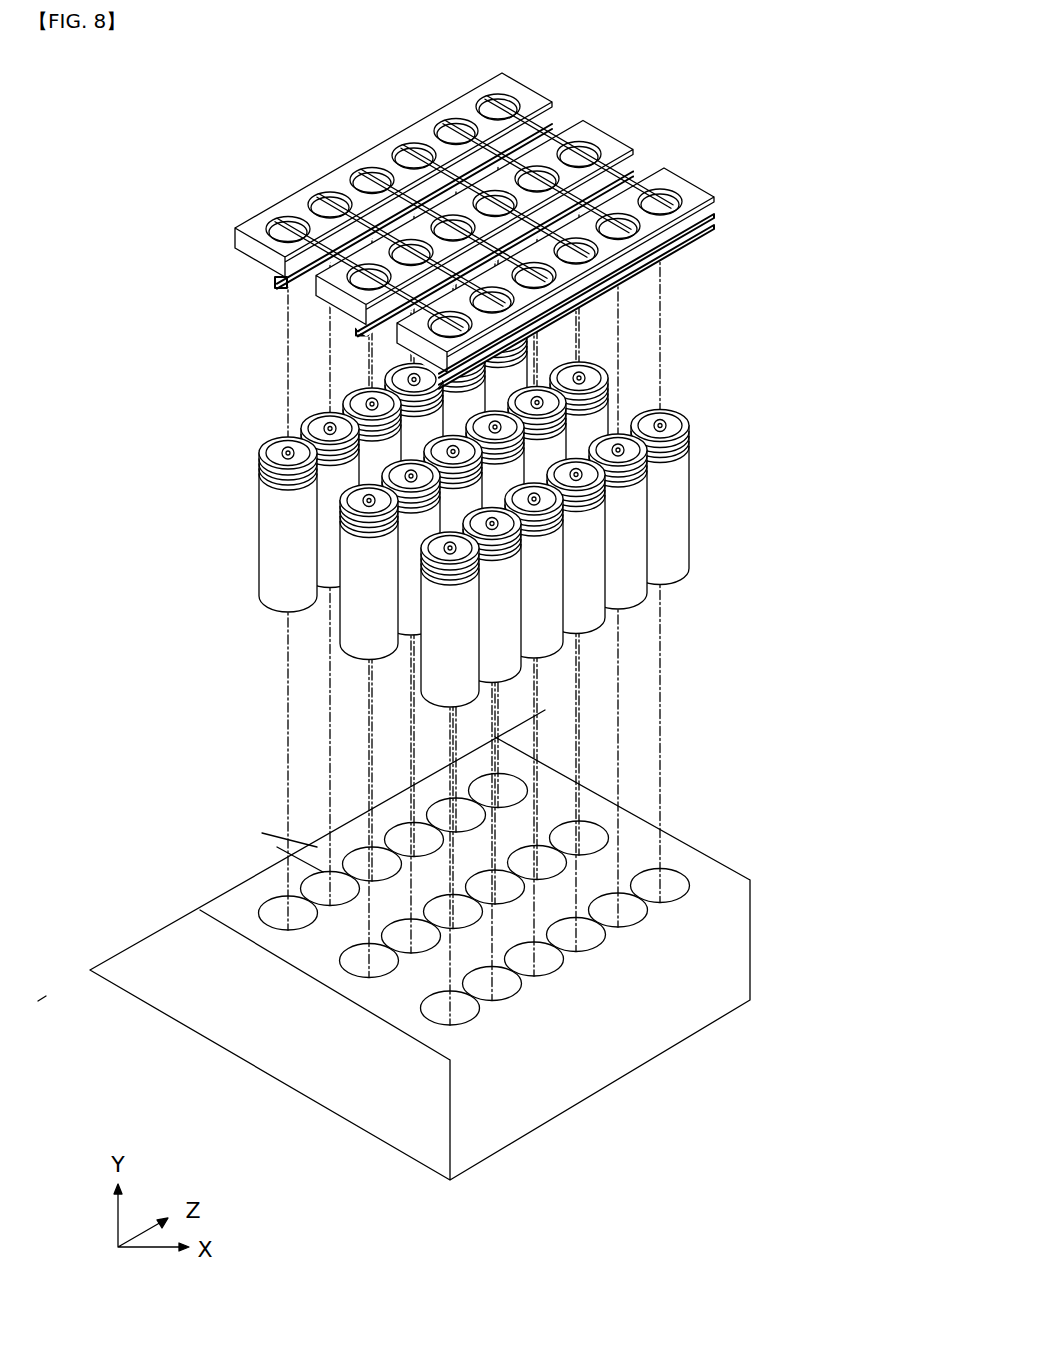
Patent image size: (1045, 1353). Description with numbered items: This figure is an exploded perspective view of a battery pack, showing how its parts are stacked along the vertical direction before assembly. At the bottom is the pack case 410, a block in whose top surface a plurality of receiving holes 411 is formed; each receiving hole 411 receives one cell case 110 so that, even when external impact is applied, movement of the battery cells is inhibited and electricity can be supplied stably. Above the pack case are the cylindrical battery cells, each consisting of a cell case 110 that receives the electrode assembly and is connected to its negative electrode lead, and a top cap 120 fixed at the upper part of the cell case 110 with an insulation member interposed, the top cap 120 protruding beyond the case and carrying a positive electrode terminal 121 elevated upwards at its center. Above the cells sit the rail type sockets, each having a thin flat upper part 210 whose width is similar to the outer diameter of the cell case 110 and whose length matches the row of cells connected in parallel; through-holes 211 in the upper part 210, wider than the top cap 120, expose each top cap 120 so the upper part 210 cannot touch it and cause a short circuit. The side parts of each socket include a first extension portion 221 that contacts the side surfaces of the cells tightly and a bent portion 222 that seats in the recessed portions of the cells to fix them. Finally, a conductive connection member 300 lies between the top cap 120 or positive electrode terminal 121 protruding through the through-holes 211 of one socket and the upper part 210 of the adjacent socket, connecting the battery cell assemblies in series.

The cell case 110 is at (707, 468).
The top cap 120 is at (703, 407).
The positive electrode terminal 121 is at (680, 392).
The upper part 210 is at (690, 180).
The through-hole 211 is at (597, 138).
The first extension portion 221 is at (717, 207).
The bent portion 222 is at (715, 228).
The connection member 300 is at (524, 220).
The pack case 410 is at (739, 961).
The receiving hole 411 is at (687, 877).